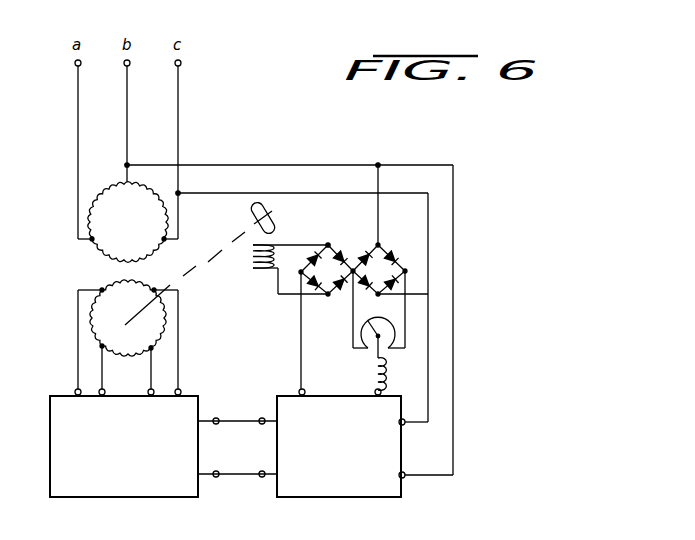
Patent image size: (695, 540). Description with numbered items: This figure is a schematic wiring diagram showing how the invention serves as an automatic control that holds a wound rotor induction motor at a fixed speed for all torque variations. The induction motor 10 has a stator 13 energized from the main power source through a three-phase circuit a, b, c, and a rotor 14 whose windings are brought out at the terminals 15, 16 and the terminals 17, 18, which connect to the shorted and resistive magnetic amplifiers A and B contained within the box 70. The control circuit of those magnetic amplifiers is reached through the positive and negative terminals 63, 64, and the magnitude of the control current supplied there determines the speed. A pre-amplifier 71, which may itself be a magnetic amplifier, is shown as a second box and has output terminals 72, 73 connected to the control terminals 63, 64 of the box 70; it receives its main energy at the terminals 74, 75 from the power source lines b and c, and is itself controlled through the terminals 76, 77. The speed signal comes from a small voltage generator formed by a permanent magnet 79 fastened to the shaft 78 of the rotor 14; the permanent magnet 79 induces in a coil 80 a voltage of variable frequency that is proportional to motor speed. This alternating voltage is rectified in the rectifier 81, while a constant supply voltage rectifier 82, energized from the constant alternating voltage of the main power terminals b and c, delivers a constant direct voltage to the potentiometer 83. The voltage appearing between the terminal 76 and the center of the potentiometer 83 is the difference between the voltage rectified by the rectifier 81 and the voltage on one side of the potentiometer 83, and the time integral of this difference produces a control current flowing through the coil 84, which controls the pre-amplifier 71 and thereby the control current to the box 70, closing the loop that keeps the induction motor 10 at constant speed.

The induction motor 10 is at (93, 280).
The stator 13 is at (105, 203).
The rotor 14 is at (92, 329).
The terminal 15 is at (75, 389).
The terminal 16 is at (148, 389).
The terminal 17 is at (176, 389).
The terminal 18 is at (100, 389).
The terminal 63 is at (224, 410).
The terminal 64 is at (218, 470).
The box 70 is at (128, 498).
The pre-amplifier 71 is at (330, 498).
The output terminal 72 is at (268, 410).
The output terminal 73 is at (263, 470).
The terminal 74 is at (405, 419).
The terminal 75 is at (405, 472).
The terminal 76 is at (308, 392).
The terminal 77 is at (384, 392).
The shaft 78 is at (196, 272).
The permanent magnet 79 is at (277, 220).
The coil 80 is at (264, 273).
The rectifier 81 is at (333, 297).
The constant supply voltage rectifier 82 is at (381, 247).
The potentiometer 83 is at (360, 340).
The coil 84 is at (390, 372).